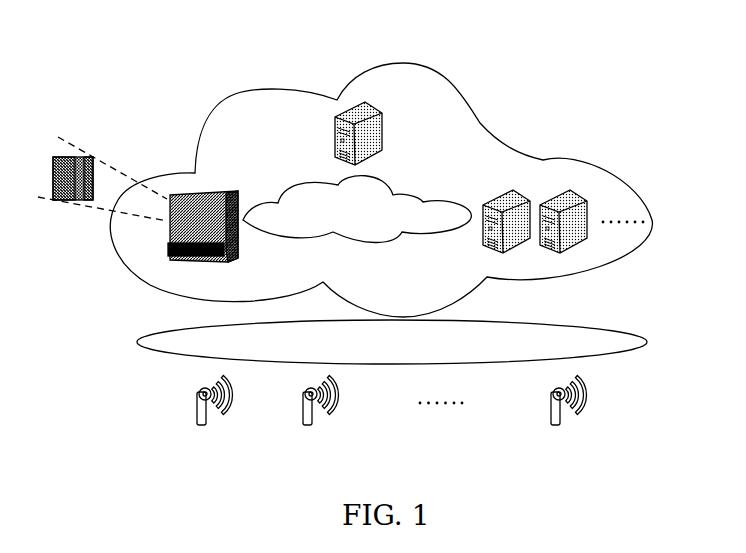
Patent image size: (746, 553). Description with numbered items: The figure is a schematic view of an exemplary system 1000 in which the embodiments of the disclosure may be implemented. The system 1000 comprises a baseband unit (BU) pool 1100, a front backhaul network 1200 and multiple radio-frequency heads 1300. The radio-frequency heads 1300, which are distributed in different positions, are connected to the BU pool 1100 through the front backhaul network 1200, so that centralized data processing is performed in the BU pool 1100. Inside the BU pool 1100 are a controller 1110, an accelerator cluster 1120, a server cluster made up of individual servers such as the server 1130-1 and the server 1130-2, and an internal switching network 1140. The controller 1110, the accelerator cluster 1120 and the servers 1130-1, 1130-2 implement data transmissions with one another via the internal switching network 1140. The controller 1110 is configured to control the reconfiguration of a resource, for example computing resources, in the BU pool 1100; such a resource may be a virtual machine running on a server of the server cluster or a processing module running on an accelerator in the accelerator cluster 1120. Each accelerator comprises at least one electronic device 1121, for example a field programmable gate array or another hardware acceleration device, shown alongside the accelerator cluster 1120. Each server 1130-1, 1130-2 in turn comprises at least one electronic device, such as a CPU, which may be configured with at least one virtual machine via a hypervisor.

The system 1000 is at (370, 216).
The baseband unit pool 1100 is at (267, 88).
The controller 1110 is at (427, 103).
The accelerator cluster 1120 is at (255, 165).
The electronic device 1121 is at (132, 133).
The internal switching network 1140 is at (427, 172).
The server 1130-1 is at (570, 170).
The server 1130-2 is at (635, 172).
The front backhaul network 1200 is at (658, 317).
The radio-frequency heads 1300 is at (637, 372).